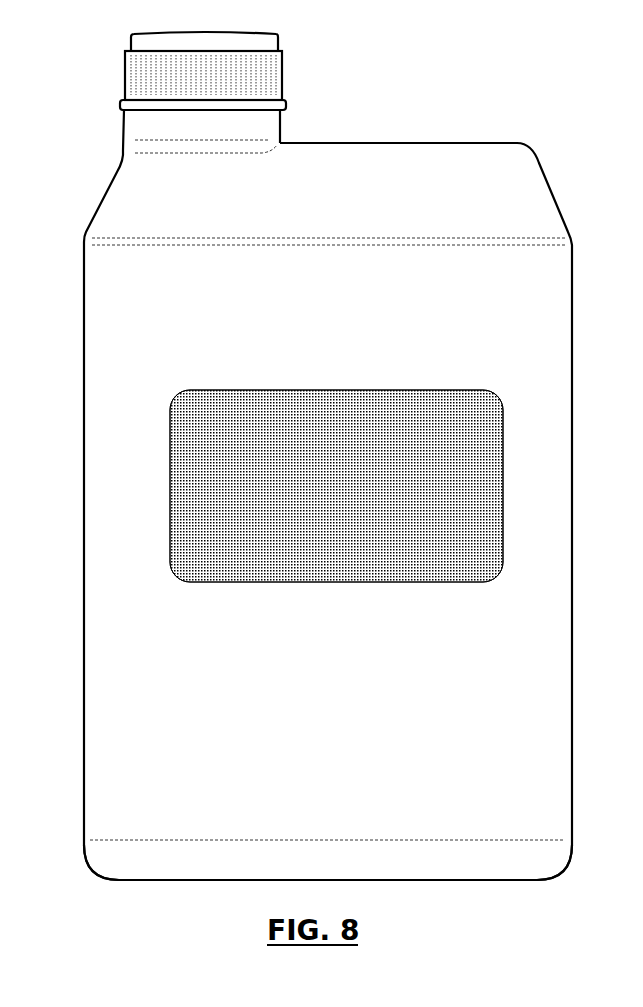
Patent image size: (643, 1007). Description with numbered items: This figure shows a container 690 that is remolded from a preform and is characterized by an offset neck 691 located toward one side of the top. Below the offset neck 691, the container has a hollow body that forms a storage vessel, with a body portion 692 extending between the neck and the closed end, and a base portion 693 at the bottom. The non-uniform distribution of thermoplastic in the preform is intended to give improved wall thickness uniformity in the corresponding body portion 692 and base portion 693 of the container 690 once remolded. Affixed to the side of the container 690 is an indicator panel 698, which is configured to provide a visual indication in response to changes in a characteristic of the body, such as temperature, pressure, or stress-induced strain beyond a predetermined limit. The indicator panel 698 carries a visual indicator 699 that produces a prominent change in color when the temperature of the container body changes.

The container 690 is at (356, 456).
The offset neck 691 is at (276, 128).
The body portion 692 is at (537, 633).
The base portion 693 is at (540, 855).
The indicator panel 698 is at (387, 430).
The visual indicator 699 is at (308, 586).